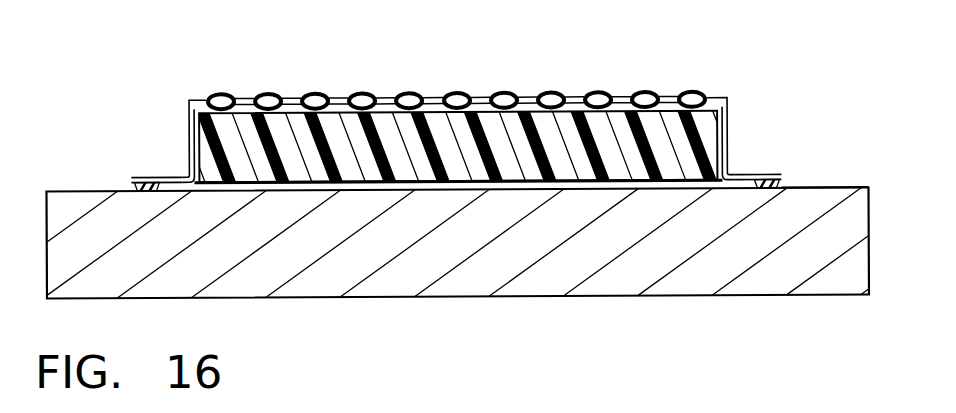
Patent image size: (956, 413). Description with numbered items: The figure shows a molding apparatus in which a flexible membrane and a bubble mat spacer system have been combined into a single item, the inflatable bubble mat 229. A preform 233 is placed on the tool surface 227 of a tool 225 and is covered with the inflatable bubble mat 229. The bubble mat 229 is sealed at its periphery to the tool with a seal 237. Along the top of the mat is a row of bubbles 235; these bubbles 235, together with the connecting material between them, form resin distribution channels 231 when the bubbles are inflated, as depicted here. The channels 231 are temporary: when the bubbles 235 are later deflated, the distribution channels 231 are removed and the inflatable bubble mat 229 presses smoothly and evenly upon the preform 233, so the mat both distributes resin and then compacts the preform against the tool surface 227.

The tool 225 is at (313, 282).
The tool surface 227 is at (840, 187).
The inflatable bubble mat 229 is at (727, 180).
The resin distribution channels 231 is at (577, 112).
The preform 233 is at (423, 163).
The bubbles 235 is at (268, 93).
The seal 237 is at (152, 191).